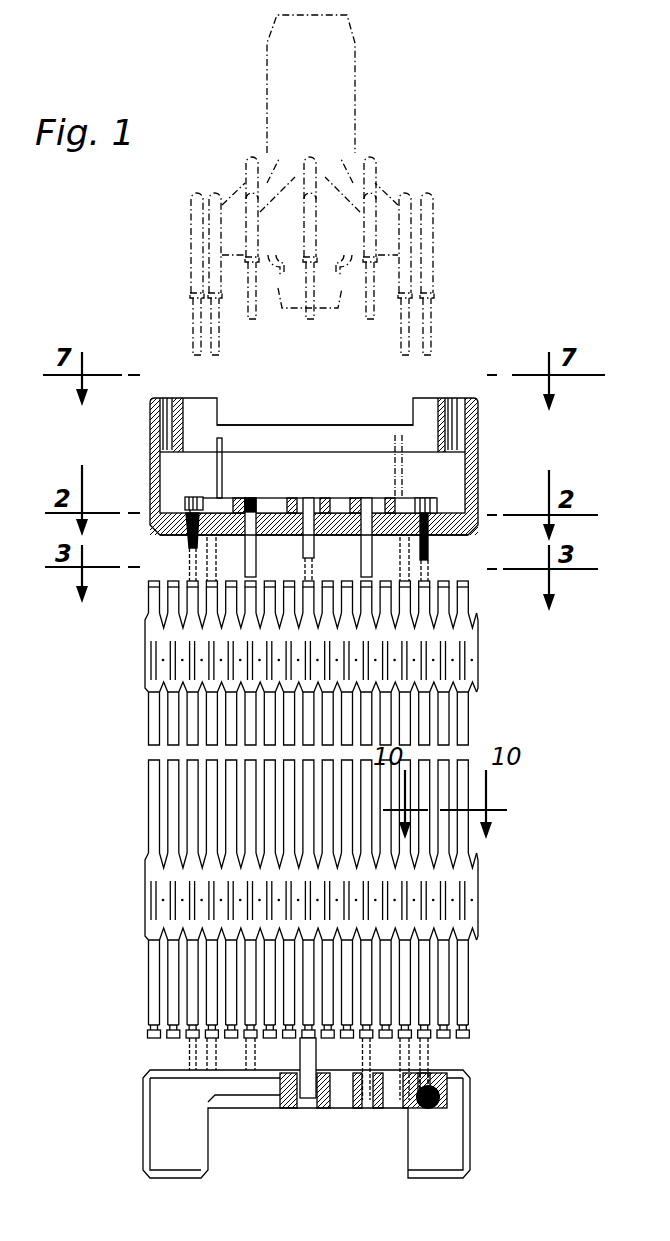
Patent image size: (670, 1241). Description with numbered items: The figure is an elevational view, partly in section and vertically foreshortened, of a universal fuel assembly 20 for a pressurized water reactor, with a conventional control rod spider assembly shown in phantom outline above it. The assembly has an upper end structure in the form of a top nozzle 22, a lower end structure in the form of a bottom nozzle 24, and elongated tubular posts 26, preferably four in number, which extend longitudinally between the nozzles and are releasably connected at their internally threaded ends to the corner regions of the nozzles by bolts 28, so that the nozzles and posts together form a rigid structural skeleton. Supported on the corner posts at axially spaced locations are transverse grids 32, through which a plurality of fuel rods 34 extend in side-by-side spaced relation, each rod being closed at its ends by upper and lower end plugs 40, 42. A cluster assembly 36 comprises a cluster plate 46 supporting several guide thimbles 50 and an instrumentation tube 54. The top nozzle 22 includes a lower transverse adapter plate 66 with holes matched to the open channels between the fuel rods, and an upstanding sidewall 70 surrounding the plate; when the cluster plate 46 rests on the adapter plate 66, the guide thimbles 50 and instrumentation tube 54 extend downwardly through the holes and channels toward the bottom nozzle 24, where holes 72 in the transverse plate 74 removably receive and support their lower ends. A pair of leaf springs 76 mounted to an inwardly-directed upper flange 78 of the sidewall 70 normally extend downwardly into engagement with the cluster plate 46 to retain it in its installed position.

The universal fuel assembly 20 is at (583, 432).
The top nozzle 22 is at (481, 440).
The bottom nozzle 24 is at (476, 1109).
The tubular posts 26 is at (190, 550).
The bolts 28 is at (200, 497).
The transverse grids 32 is at (480, 655).
The fuel rods 34 is at (150, 702).
The cluster assembly 36 is at (346, 493).
The upper end plugs 40 is at (150, 585).
The lower end plugs 42 is at (152, 1038).
The cluster plate 46 is at (280, 498).
The guide thimbles 50 is at (248, 572).
The instrumentation tube 54 is at (290, 1068).
The adapter plate 66 is at (466, 540).
The upstanding sidewall 70 is at (150, 430).
The holes 72 is at (353, 1100).
The transverse plate 74 is at (245, 1108).
The leaf springs 76 is at (226, 484).
The upper flange 78 is at (262, 437).